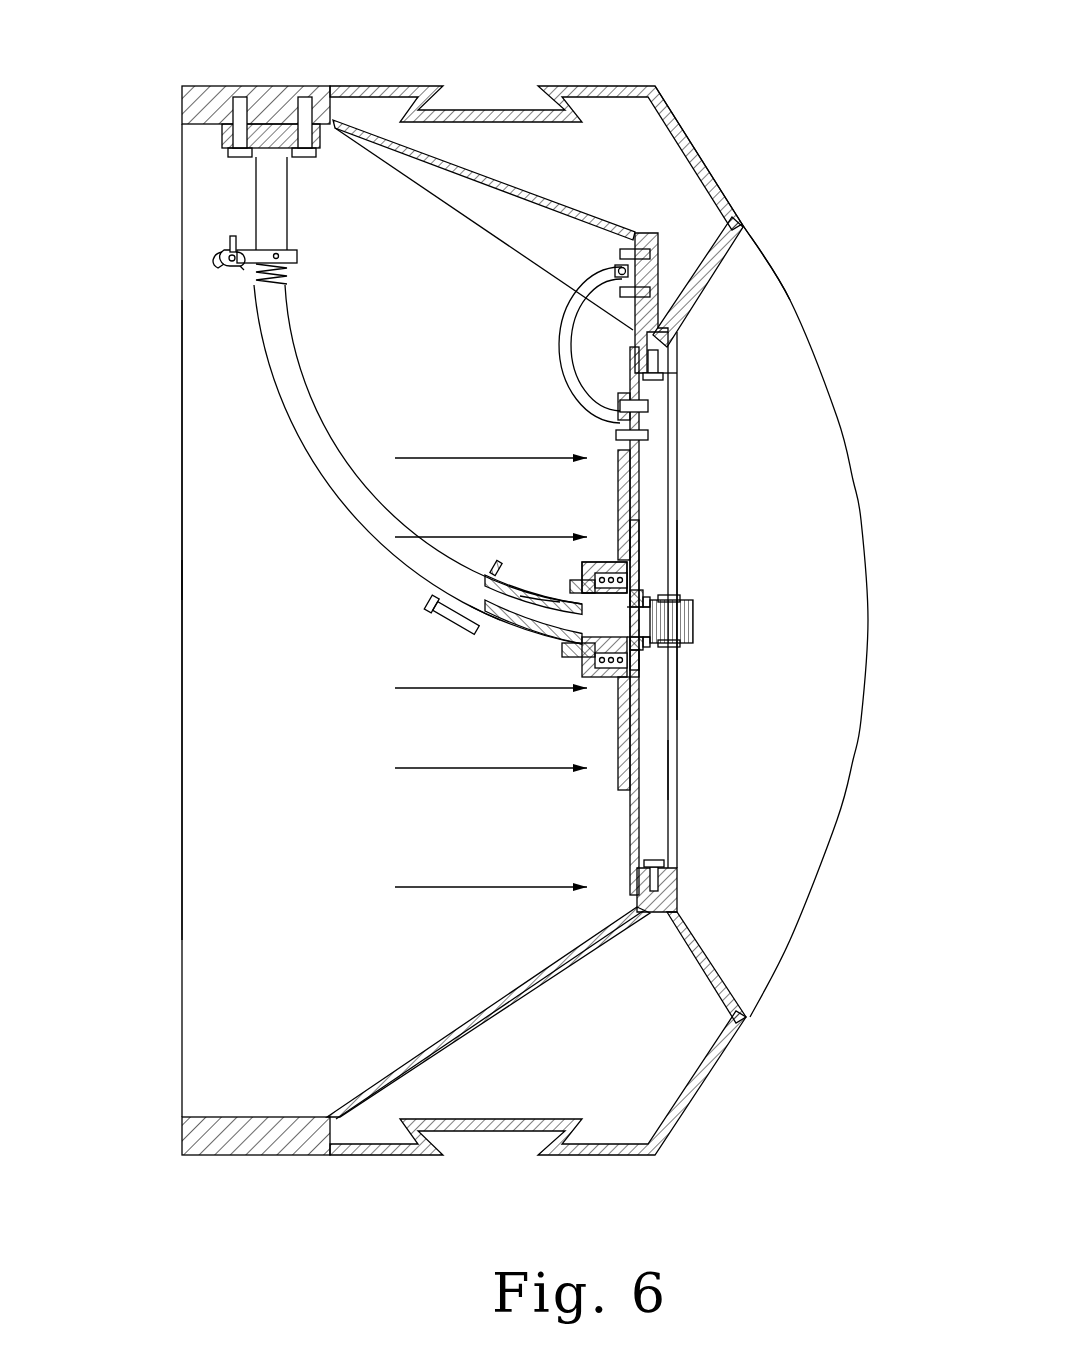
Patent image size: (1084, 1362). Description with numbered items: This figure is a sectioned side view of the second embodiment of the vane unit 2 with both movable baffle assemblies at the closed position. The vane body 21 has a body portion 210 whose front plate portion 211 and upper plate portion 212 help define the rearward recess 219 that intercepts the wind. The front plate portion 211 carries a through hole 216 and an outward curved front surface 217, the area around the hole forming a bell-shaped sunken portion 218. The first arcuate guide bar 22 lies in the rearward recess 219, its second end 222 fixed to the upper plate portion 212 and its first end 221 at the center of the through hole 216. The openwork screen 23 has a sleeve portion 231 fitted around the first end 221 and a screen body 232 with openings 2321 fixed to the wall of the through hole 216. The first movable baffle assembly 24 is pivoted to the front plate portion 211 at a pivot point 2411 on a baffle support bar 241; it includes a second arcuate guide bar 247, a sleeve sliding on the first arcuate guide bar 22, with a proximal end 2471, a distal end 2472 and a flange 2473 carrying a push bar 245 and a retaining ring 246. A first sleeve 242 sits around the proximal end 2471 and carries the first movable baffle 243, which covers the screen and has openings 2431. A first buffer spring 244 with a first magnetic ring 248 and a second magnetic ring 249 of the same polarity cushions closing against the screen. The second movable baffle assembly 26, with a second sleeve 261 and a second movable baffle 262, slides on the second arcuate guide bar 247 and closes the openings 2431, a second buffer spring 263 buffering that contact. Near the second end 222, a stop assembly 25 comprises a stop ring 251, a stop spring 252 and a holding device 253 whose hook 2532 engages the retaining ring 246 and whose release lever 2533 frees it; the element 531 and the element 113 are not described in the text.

The vane unit 2 is at (540, 58).
The vane body 21 is at (752, 182).
The body portion 210 is at (710, 156).
The front plate portion 211 is at (679, 338).
The upper plate portion 212 is at (372, 86).
The through hole 216 is at (672, 368).
The outward curved front surface 217 is at (772, 280).
The sunken portion 218 is at (805, 415).
The rearward recess 219 is at (285, 548).
The first arcuate guide bar 22 is at (261, 362).
The first end 221 is at (697, 620).
The second end 222 is at (262, 168).
The openwork screen 23 is at (692, 552).
The sleeve portion 231 is at (680, 645).
The screen body 232 is at (678, 812).
The openings 2321 is at (673, 773).
The first movable baffle assembly 24 is at (642, 448).
The baffle support bar 241 is at (557, 348).
The pivot point 2411 is at (660, 268).
The first sleeve 242 is at (642, 586).
The first movable baffle 243 is at (640, 836).
The openings 2431 is at (642, 778).
The first buffer spring 244 is at (650, 597).
The push bar 245 is at (432, 606).
The retaining ring 246 is at (446, 630).
The second arcuate guide bar 247 is at (602, 672).
The proximal end 2471 is at (610, 690).
The distal end 2472 is at (520, 640).
The flange 2473 is at (478, 634).
The first magnetic ring 248 is at (646, 652).
The second magnetic ring 249 is at (642, 672).
The stop assembly 25 is at (293, 248).
The stop ring 251 is at (298, 257).
The stop spring 252 is at (290, 280).
The holding device 253 is at (224, 242).
The hook 2532 is at (212, 258).
The release lever 2533 is at (233, 235).
The cord 531 is at (240, 272).
The second movable baffle assembly 26 is at (608, 538).
The second sleeve 261 is at (582, 590).
The second movable baffle 262 is at (642, 487).
The second buffer spring 263 is at (622, 548).
The bottom plate 113 is at (315, 1160).